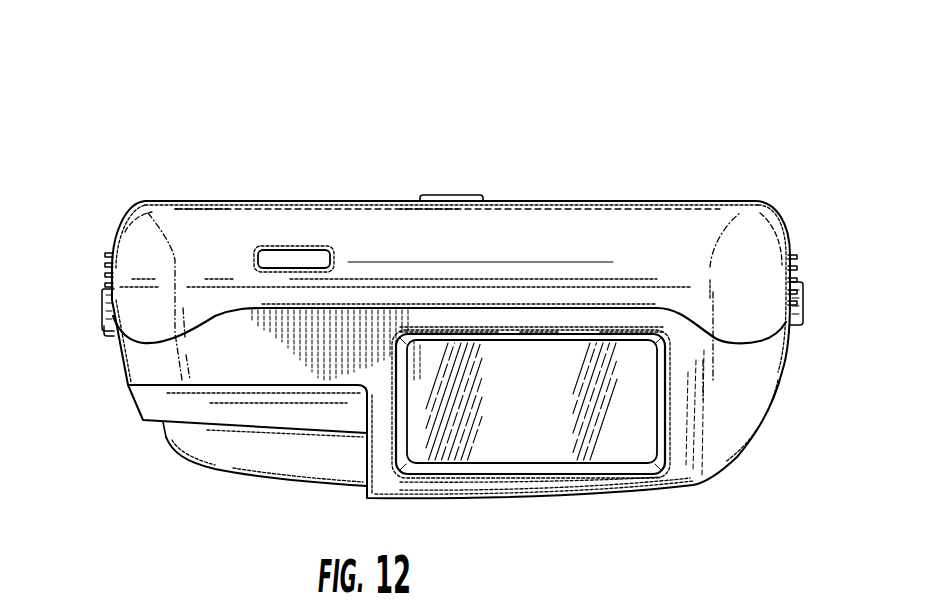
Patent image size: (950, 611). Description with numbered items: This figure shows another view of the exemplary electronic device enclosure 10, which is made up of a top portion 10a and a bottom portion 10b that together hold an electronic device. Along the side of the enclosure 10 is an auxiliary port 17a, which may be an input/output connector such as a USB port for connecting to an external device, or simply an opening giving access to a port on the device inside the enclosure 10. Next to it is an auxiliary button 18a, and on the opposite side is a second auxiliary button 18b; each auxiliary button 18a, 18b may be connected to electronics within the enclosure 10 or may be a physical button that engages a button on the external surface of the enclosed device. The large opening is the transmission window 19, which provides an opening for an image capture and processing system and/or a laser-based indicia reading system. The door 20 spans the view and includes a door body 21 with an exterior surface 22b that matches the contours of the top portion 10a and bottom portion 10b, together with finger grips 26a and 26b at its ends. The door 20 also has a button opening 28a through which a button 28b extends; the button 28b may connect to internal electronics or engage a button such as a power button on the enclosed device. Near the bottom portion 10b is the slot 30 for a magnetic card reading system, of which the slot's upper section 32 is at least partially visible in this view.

The enclosure 10 is at (478, 117).
The top portion 10a is at (143, 233).
The bottom portion 10b is at (740, 417).
The auxiliary port 17a is at (107, 330).
The auxiliary button 18a is at (102, 302).
The auxiliary button 18b is at (803, 305).
The transmission window 19 is at (615, 440).
The door 20 is at (565, 240).
The door body 21 is at (645, 235).
The exterior surface 22b is at (752, 232).
The finger grip 26a is at (103, 265).
The finger grip 26b is at (798, 262).
The button opening 28a is at (267, 247).
The button 28b is at (313, 262).
The slot 30 is at (165, 436).
The upper section 32 is at (218, 460).